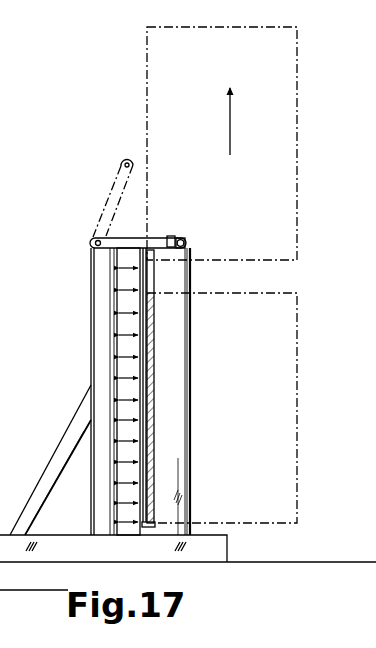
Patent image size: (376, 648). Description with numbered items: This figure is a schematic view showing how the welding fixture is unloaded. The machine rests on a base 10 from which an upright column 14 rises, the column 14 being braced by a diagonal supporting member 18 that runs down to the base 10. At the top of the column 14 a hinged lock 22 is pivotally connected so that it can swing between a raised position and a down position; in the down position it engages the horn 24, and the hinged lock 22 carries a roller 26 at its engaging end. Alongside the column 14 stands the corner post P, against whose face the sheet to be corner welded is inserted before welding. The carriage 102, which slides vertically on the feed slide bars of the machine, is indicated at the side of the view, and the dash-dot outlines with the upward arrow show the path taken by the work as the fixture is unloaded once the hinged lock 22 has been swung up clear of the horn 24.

The base 10 is at (83, 556).
The upright column 14 is at (100, 486).
The diagonal supporting member 18 is at (53, 471).
The hinged lock 22 is at (156, 232).
The horn 24 is at (177, 237).
The roller 26 is at (185, 243).
The carriage 102 is at (9, 160).
The corner post P is at (195, 368).